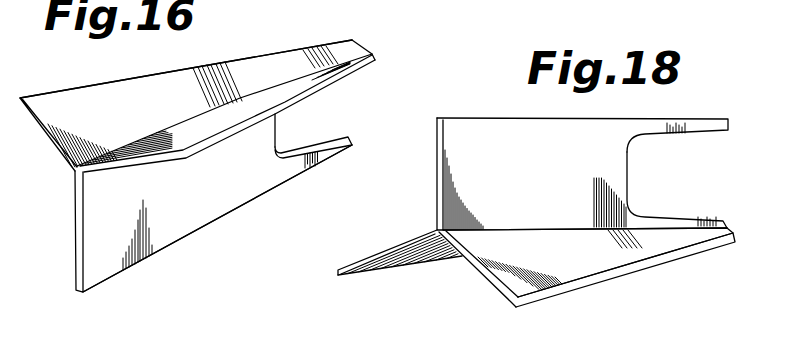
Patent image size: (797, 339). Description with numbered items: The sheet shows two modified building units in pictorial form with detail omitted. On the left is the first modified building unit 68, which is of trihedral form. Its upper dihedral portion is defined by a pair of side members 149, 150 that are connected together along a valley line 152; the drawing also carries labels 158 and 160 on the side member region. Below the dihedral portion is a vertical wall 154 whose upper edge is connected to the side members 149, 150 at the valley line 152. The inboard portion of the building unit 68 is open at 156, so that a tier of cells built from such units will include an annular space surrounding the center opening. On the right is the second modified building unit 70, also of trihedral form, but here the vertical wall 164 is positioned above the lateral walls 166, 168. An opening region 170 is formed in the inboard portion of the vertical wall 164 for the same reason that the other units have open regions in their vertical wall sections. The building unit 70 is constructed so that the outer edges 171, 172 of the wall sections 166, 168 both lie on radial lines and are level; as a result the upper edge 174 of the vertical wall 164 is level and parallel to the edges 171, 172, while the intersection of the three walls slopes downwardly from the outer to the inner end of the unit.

In FIG. 16, the side member 149 is at (104, 90).
In FIG. 16, the side member 150 is at (214, 131).
In FIG. 16, the valley line 152 is at (232, 100).
In FIG. 16, the vertical wall 154 is at (92, 214).
In FIG. 16, the open inboard portion 156 is at (300, 118).
In FIG. 16, the upper edge 158 is at (265, 54).
In FIG. 16, the end portion 160 is at (341, 76).
In FIG. 16, the building unit 68 is at (187, 252).
In FIG. 18, the upper edge 174 is at (476, 117).
In FIG. 18, the opening region 170 is at (668, 176).
In FIG. 18, the vertical wall 164 is at (437, 180).
In FIG. 18, the lateral wall 166 is at (364, 257).
In FIG. 18, the outer edge 171 is at (386, 272).
In FIG. 18, the lateral wall 168 is at (508, 287).
In FIG. 18, the outer edge 172 is at (679, 257).
In FIG. 18, the building unit 70 is at (651, 288).